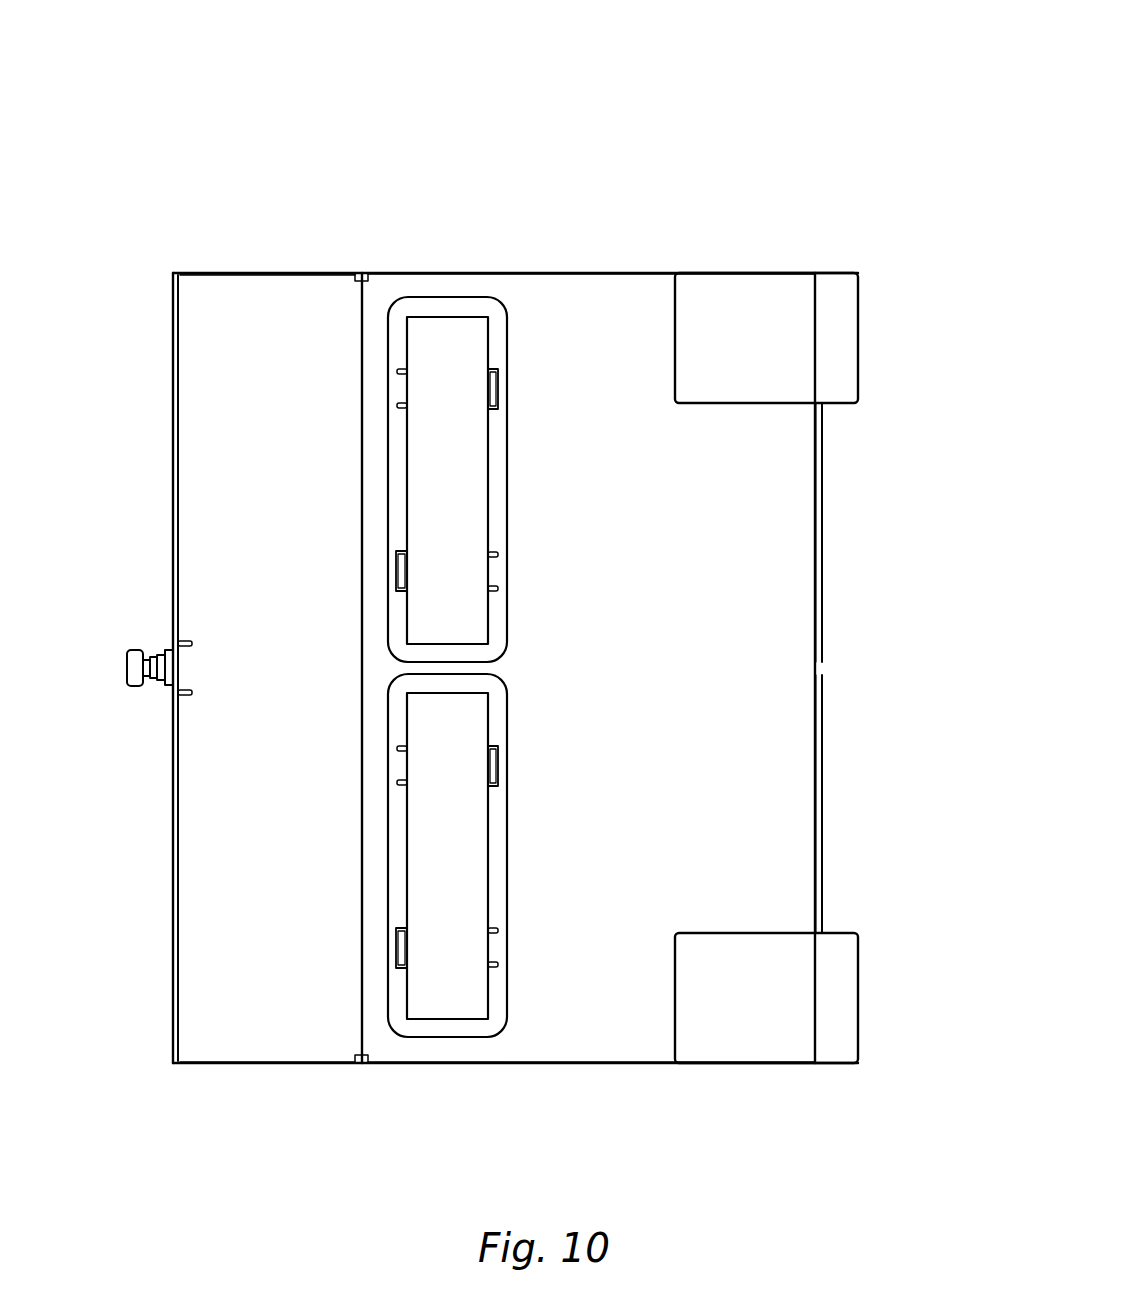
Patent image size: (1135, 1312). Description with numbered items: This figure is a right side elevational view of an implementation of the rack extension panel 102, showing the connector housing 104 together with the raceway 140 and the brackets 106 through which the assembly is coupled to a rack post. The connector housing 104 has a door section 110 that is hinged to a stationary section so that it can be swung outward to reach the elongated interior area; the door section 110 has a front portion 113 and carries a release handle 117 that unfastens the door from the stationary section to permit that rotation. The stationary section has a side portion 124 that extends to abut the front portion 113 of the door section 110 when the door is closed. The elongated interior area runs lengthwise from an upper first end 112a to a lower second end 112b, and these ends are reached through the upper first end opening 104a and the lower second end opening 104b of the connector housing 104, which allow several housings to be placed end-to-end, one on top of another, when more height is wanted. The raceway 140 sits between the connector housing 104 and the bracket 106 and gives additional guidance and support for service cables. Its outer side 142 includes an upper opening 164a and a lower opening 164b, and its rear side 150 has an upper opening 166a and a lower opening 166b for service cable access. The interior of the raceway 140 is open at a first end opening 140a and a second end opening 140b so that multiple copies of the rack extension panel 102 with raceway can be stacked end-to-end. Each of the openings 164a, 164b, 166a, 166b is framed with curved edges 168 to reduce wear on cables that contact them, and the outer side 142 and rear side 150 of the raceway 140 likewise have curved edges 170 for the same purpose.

The rack extension panel 102 is at (711, 63).
The connector housing 104 is at (184, 232).
The upper first end opening 104a is at (300, 1063).
The lower second end opening 104b is at (322, 276).
The brackets 106 is at (858, 310).
The door section 110 is at (131, 370).
The upper first end of elongated interior area 112a is at (249, 1102).
The lower second end of elongated interior area 112b is at (238, 248).
The front portion 113 is at (173, 476).
The release handle 117 is at (128, 662).
The side portion 124 is at (292, 316).
The raceway 140 is at (520, 226).
The first end opening 140a is at (597, 1063).
The second end opening 140b is at (610, 273).
The outer side 142 is at (650, 305).
The rear side 150 is at (822, 628).
The upper opening 164a is at (455, 460).
The lower opening 164b is at (455, 840).
The upper opening 166a is at (851, 547).
The lower opening 166b is at (851, 832).
The curved edges 168 is at (452, 310).
The curved edges 170 is at (357, 276).